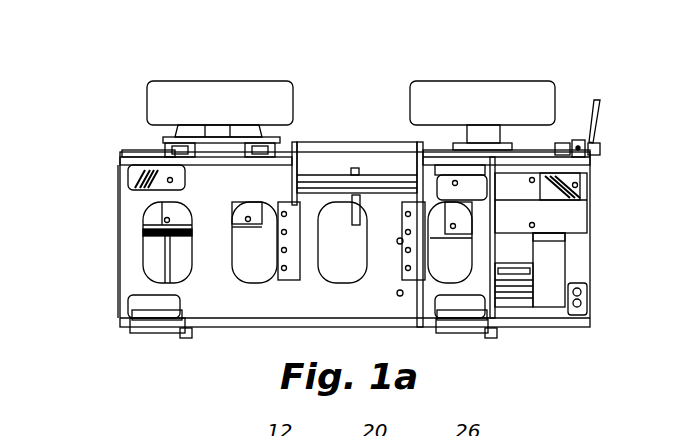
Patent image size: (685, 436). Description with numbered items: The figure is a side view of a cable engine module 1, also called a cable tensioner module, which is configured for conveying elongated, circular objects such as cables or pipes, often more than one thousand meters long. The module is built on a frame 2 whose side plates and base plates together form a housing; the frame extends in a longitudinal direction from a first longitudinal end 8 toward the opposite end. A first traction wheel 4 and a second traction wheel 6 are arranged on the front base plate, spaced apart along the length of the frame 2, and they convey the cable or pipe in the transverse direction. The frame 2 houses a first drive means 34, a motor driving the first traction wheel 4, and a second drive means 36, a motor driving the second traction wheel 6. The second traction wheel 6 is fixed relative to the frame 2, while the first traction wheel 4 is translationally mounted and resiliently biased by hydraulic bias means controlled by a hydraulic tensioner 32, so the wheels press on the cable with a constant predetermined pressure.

The cable engine module 1 is at (333, 72).
The frame 2 is at (116, 243).
The first traction wheel 4 is at (237, 88).
The second traction wheel 6 is at (467, 88).
The first longitudinal end 8 is at (120, 266).
The hydraulic tensioner 32 is at (582, 140).
The first drive means 34 is at (150, 218).
The second drive means 36 is at (575, 218).